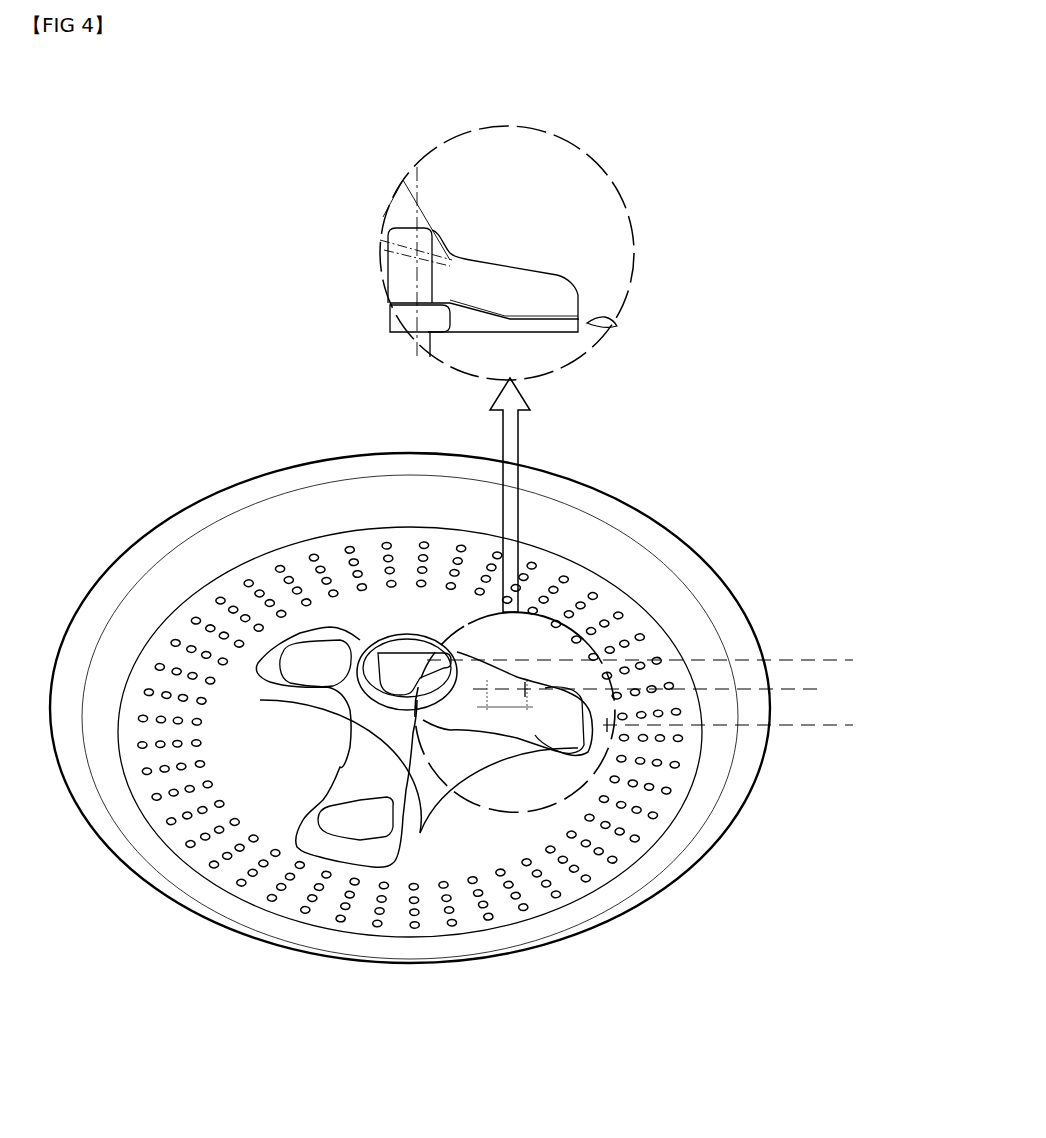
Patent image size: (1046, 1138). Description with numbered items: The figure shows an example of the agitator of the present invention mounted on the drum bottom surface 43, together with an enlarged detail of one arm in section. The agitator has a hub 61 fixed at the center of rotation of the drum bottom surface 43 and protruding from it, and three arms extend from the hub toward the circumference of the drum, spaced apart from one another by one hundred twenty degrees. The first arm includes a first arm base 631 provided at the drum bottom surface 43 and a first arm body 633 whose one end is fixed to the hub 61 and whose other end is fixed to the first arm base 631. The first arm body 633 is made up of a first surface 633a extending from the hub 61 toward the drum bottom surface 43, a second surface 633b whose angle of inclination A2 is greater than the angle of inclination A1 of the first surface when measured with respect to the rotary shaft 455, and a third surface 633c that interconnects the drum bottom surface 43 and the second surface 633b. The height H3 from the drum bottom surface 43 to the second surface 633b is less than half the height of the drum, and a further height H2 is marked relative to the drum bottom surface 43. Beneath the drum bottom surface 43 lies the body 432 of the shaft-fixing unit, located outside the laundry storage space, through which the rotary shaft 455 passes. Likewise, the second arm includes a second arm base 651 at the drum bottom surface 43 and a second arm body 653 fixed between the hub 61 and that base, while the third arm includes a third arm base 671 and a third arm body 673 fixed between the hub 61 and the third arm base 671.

The drum bottom surface 43 is at (596, 545).
The hub 61 is at (401, 660).
The body 432 is at (407, 323).
The rotary shaft 455 is at (425, 341).
The first arm base 631 is at (570, 752).
The first arm body 633 is at (558, 626).
The first surface 633a is at (476, 695).
The second surface 633b is at (507, 693).
The third surface 633c is at (545, 695).
The second arm base 651 is at (345, 845).
The second arm body 653 is at (388, 758).
The third arm base 671 is at (273, 670).
The third arm body 673 is at (330, 690).
The angle of inclination of the first surface A1 is at (423, 224).
The angle of inclination of the second surface A2 is at (427, 277).
The height H2 is at (865, 662).
The height from the drum bottom surface to the second surface H3 is at (823, 689).